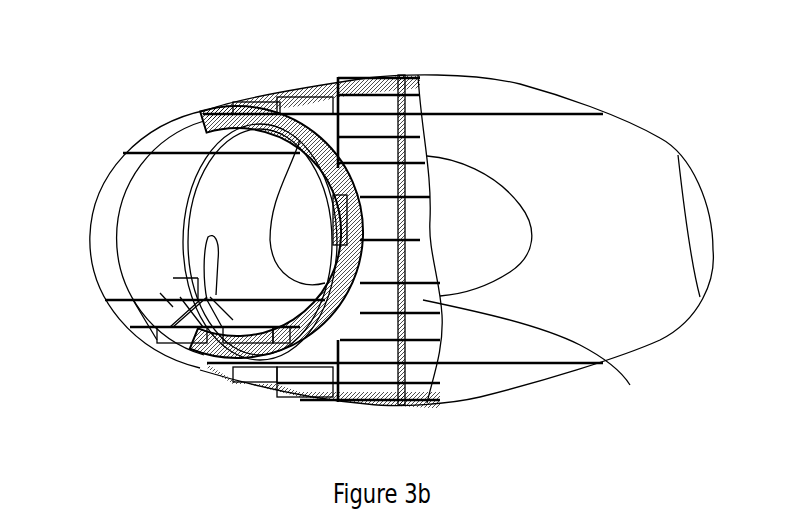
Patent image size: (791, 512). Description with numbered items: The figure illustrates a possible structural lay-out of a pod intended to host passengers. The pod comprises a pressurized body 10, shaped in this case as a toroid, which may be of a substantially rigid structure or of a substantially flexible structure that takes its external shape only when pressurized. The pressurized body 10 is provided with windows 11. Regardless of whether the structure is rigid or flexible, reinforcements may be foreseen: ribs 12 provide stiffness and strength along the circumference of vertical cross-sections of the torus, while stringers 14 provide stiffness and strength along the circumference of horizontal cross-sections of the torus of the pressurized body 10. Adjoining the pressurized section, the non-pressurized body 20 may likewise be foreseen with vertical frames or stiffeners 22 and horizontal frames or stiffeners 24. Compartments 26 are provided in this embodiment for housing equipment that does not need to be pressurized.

The pressurized body 10 is at (612, 313).
The windows 11 is at (485, 210).
The ribs 12 is at (180, 210).
The stringers 14 is at (167, 153).
The non-pressurized body 20 is at (447, 388).
The vertical frames or stiffeners 22 is at (337, 103).
The horizontal frames or stiffeners 24 is at (383, 370).
The compartments 26 is at (537, 360).